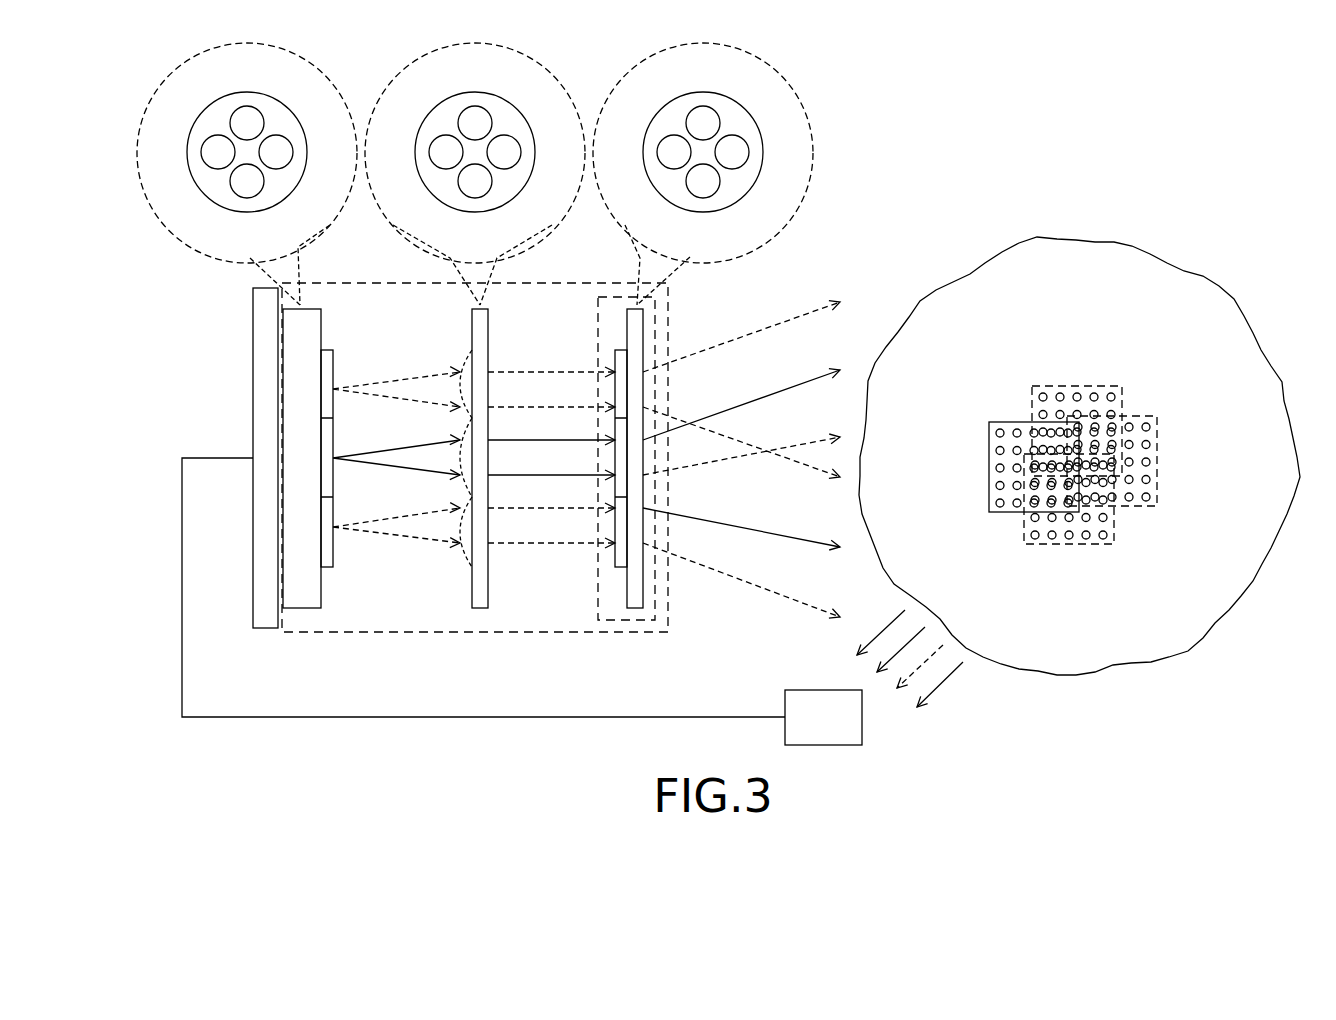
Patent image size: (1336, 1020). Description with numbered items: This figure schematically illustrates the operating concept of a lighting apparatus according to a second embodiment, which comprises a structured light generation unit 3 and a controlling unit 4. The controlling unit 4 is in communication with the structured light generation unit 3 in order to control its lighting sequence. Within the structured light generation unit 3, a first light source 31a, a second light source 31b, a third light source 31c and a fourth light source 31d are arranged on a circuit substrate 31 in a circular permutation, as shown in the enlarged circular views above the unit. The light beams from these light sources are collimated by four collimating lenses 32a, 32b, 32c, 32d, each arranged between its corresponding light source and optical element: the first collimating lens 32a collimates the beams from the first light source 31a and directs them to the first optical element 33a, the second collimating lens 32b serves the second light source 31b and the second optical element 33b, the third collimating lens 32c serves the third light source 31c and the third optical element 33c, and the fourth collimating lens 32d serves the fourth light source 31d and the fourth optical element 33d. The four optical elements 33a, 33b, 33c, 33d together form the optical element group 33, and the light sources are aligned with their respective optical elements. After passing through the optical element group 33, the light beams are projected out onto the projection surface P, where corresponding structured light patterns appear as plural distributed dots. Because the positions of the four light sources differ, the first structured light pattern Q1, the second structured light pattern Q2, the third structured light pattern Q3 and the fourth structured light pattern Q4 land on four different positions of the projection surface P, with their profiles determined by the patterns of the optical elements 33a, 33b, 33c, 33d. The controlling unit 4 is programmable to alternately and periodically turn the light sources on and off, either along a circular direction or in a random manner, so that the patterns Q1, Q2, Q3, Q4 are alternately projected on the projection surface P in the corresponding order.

The structured light generation unit 3 is at (340, 632).
The controlling unit 4 is at (265, 378).
The circuit substrate 31 is at (307, 350).
The first light source 31a is at (247, 123).
The second light source 31b is at (276, 152).
The third light source 31c is at (247, 181).
The fourth light source 31d is at (218, 152).
The first collimating lens 32a is at (475, 123).
The second collimating lens 32b is at (504, 152).
The third collimating lens 32c is at (475, 181).
The fourth collimating lens 32d is at (446, 152).
The optical element group 33 is at (665, 337).
The first optical element 33a is at (703, 123).
The second optical element 33b is at (732, 152).
The third optical element 33c is at (703, 181).
The fourth optical element 33d is at (674, 152).
The projection surface P is at (1180, 290).
The first structured light pattern Q1 is at (1092, 386).
The second structured light pattern Q2 is at (1157, 457).
The third structured light pattern Q3 is at (1090, 545).
The fourth structured light pattern Q4 is at (989, 447).